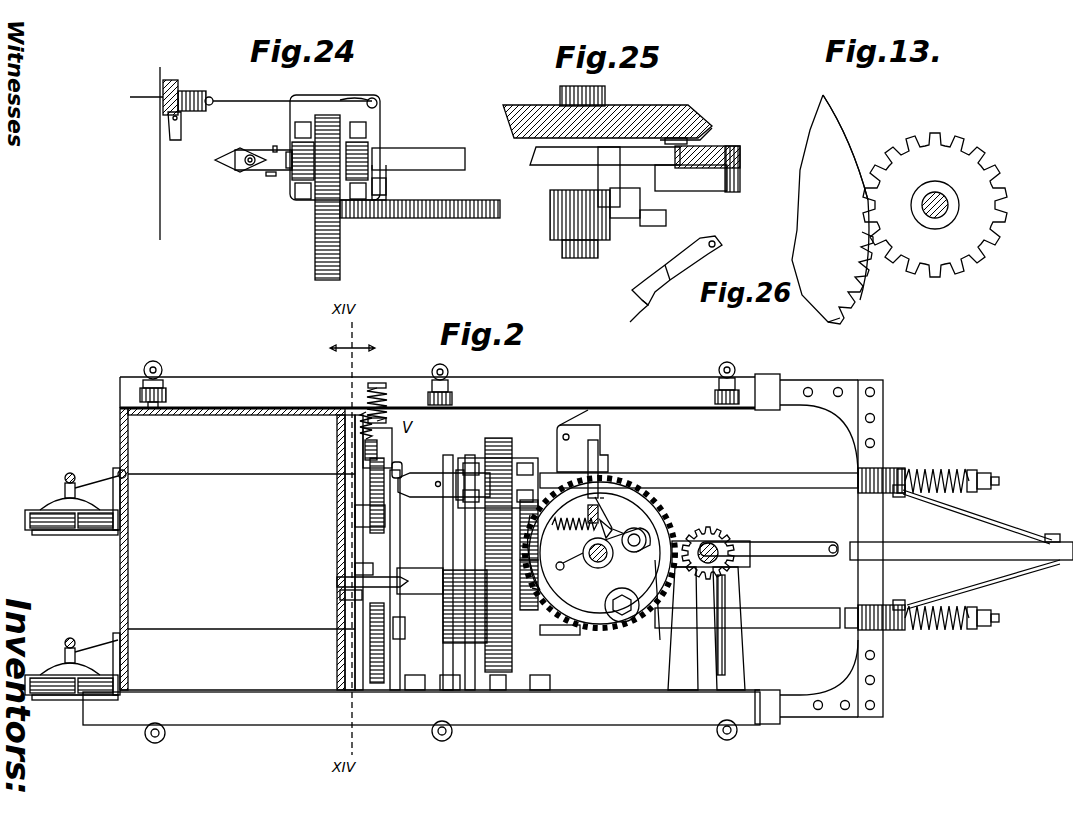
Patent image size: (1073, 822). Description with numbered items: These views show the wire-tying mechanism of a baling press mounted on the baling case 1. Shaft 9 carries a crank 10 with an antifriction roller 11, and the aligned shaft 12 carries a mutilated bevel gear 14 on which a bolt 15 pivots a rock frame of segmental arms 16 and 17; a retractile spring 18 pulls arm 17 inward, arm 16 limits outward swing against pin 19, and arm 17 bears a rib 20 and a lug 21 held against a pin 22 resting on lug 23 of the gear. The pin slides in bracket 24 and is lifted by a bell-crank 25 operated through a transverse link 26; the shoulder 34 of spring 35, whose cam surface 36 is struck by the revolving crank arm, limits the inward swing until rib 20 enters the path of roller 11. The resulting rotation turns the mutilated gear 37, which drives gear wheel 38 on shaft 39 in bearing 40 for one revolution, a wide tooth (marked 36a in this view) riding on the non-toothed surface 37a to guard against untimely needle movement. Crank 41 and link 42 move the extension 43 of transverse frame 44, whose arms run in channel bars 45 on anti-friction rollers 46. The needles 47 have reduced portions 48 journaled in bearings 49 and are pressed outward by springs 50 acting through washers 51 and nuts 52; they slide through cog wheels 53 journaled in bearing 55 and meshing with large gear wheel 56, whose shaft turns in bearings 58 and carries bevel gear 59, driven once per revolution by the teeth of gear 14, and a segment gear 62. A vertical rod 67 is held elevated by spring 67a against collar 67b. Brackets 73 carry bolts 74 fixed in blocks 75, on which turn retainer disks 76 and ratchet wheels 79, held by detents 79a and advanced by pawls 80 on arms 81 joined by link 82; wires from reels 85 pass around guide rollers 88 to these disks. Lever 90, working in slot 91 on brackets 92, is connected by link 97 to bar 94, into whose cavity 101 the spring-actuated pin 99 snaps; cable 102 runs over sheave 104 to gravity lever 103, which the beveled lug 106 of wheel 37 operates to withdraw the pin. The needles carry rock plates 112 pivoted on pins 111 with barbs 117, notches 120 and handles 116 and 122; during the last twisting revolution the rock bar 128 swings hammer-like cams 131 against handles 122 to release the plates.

In FIG. 2, the baling case 1 is at (125, 592).
In FIG. 25, the shaft 9 is at (588, 256).
In FIG. 2, the shaft 9 is at (612, 560).
In FIG. 25, the crank 10 is at (627, 208).
In FIG. 2, the crank 10 is at (642, 552).
In FIG. 25, the antifriction roller 11 is at (654, 227).
In FIG. 25, the shaft 12 is at (605, 96).
In FIG. 25, the mutilated bevel gear 14 is at (520, 110).
In FIG. 2, the mutilated bevel gear 14 is at (610, 628).
In FIG. 2, the bolt 15 is at (625, 620).
In FIG. 25, the segmental arm 16 is at (545, 157).
In FIG. 2, the segmental arm 16 is at (561, 561).
In FIG. 25, the segmental arm 17 is at (740, 150).
In FIG. 2, the segmental arm 17 is at (665, 611).
In FIG. 2, the retractile spring 18 is at (569, 514).
In FIG. 2, the pin 19 is at (568, 554).
In FIG. 25, the rib 20 is at (740, 176).
In FIG. 2, the rib 20 is at (640, 530).
In FIG. 2, the lug 21 is at (620, 530).
In FIG. 2, the pin 22 is at (600, 505).
In FIG. 2, the lug 23 is at (584, 503).
In FIG. 2, the bracket 24 is at (600, 470).
In FIG. 2, the bell-crank 25 is at (585, 440).
In FIG. 2, the transverse link 26 is at (562, 422).
In FIG. 25, the shoulder 34 is at (670, 140).
In FIG. 26, the shoulder 34 is at (690, 268).
In FIG. 2, the shoulder 34 is at (602, 498).
In FIG. 25, the spring 35 is at (700, 146).
In FIG. 26, the spring 35 is at (705, 240).
In FIG. 26, the cam surface 36 is at (642, 312).
In FIG. 2, the cam surface 36 is at (612, 522).
In FIG. 13, the teeth 36a is at (878, 172).
In FIG. 24, the mutilated gear 37 is at (476, 206).
In FIG. 13, the mutilated gear 37 is at (858, 209).
In FIG. 2, the mutilated gear 37 is at (585, 638).
In FIG. 13, the non-toothed surface 37a is at (840, 118).
In FIG. 13, the gear wheel 38 is at (958, 162).
In FIG. 2, the gear wheel 38 is at (725, 535).
In FIG. 13, the shaft 39 is at (946, 204).
In FIG. 2, the shaft 39 is at (740, 566).
In FIG. 2, the bearing 40 is at (735, 604).
In FIG. 2, the crank 41 is at (780, 556).
In FIG. 2, the link 42 is at (940, 552).
In FIG. 2, the extension 43 is at (1025, 534).
In FIG. 2, the transverse frame 44 is at (883, 400).
In FIG. 2, the channel bars 45 is at (655, 383).
In FIG. 2, the anti-friction rollers 46 is at (162, 372).
In FIG. 24, the needles 47 is at (428, 150).
In FIG. 2, the needles 47 is at (786, 474).
In FIG. 2, the reduced cylindrical portions 48 is at (999, 481).
In FIG. 2, the bearings 49 is at (866, 485).
In FIG. 2, the spring 50 is at (945, 470).
In FIG. 2, the washers 51 is at (903, 470).
In FIG. 2, the nuts 52 is at (990, 474).
In FIG. 24, the cog wheels 53 is at (289, 170).
In FIG. 24, the bearing 55 is at (292, 135).
In FIG. 2, the bearing 55 is at (525, 458).
In FIG. 24, the large gear wheel 56 is at (318, 232).
In FIG. 2, the large gear wheel 56 is at (505, 673).
In FIG. 2, the bearings 58 is at (440, 640).
In FIG. 2, the bevel gear 59 is at (538, 630).
In FIG. 2, the segment gear 62 is at (398, 590).
In FIG. 2, the vertical rod 67 is at (376, 384).
In FIG. 2, the spring 67a is at (366, 412).
In FIG. 2, the collar 67b is at (386, 386).
In FIG. 2, the brackets 73 is at (355, 428).
In FIG. 2, the bolts 74 is at (398, 462).
In FIG. 2, the blocks 75 is at (360, 477).
In FIG. 2, the disks 76 is at (345, 445).
In FIG. 2, the ratchet wheels 79 is at (372, 485).
In FIG. 2, the pivoted detents 79a is at (362, 455).
In FIG. 2, the spring-actuated pawls 80 is at (118, 473).
In FIG. 2, the arms 81 is at (365, 500).
In FIG. 2, the link 82 is at (355, 515).
In FIG. 2, the reels 85 is at (48, 505).
In FIG. 2, the guide rollers 88 is at (125, 472).
In FIG. 2, the lever 90 is at (350, 580).
In FIG. 2, the longitudinal slot 91 is at (355, 568).
In FIG. 2, the brackets 92 is at (350, 592).
In FIG. 24, the bar 94 is at (172, 82).
In FIG. 24, the link 97 is at (168, 128).
In FIG. 24, the spring actuated pin 99 is at (213, 99).
In FIG. 24, the cavity 101 is at (132, 96).
In FIG. 24, the cable 102 is at (258, 100).
In FIG. 24, the gravity lever 103 is at (380, 170).
In FIG. 24, the sheave 104 is at (378, 100).
In FIG. 24, the beveled lug 106 is at (386, 194).
In FIG. 2, the cross pins 111 is at (437, 480).
In FIG. 24, the rock plates 112 is at (262, 174).
In FIG. 2, the rock plates 112 is at (448, 470).
In FIG. 24, the handles 116 is at (273, 149).
In FIG. 24, the rollers or barbs 117 is at (218, 164).
In FIG. 2, the notches 120 is at (470, 455).
In FIG. 24, the handles 122 is at (256, 172).
In FIG. 2, the handles 122 is at (460, 470).
In FIG. 2, the rock bar 128 is at (545, 640).
In FIG. 2, the hammer-like cams 131 is at (440, 497).